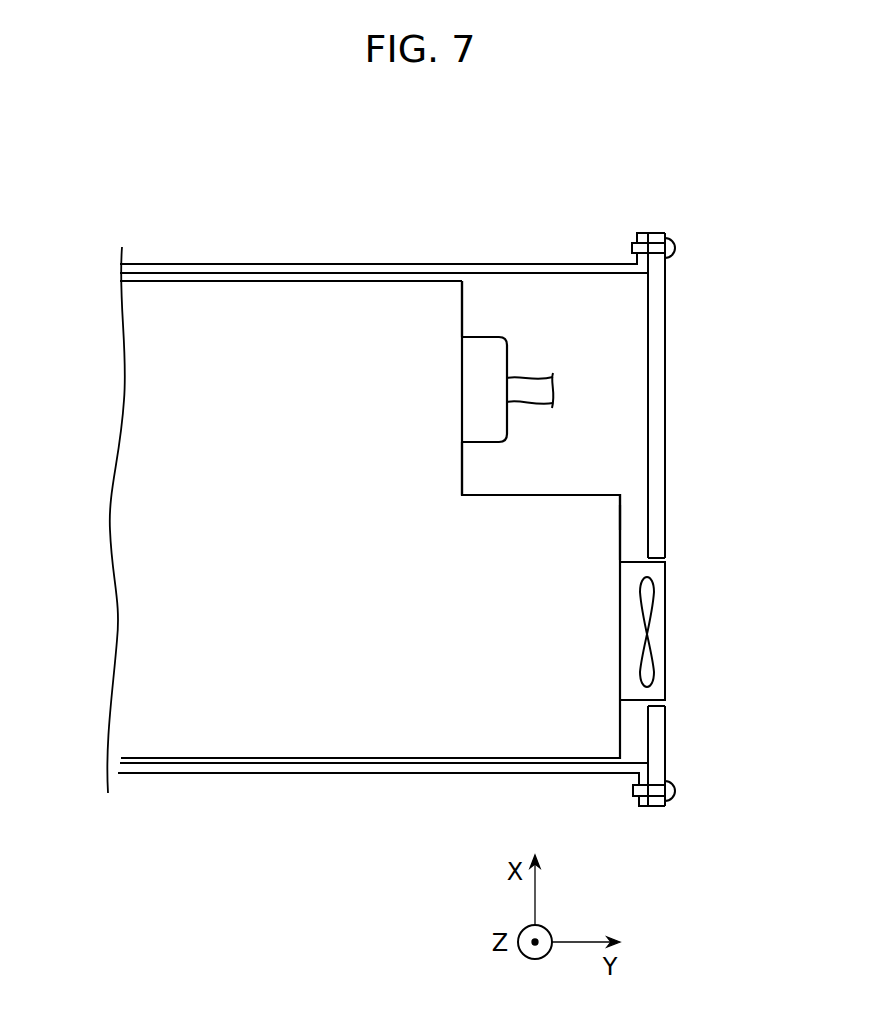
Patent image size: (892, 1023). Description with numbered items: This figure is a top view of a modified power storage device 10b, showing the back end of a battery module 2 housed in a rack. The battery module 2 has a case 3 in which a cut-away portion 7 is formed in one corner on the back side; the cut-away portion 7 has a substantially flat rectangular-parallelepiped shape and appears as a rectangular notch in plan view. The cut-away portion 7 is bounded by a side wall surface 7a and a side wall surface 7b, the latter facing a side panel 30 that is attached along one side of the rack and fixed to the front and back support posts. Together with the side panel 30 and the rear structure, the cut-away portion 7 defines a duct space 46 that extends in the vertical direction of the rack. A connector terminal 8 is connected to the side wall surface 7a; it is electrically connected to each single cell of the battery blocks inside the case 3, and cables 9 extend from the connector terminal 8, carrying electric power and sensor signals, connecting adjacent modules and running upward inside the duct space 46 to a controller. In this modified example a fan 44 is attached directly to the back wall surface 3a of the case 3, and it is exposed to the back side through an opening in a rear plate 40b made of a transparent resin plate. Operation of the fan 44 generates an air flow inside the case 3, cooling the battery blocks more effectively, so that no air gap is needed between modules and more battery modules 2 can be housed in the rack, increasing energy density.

The battery module 2 is at (234, 318).
The case 3 is at (320, 282).
The side panel 30 is at (453, 264).
The cut-away portion 7 is at (463, 463).
The side wall surface 7a is at (465, 295).
The side wall surface 7b is at (601, 494).
The connector terminal 8 is at (487, 353).
The cables 9 is at (533, 395).
The duct space 46 is at (593, 323).
The rear plate 40b is at (666, 397).
The back wall surface 3a is at (620, 523).
The fan 44 is at (666, 632).
The power storage device 10b is at (388, 236).